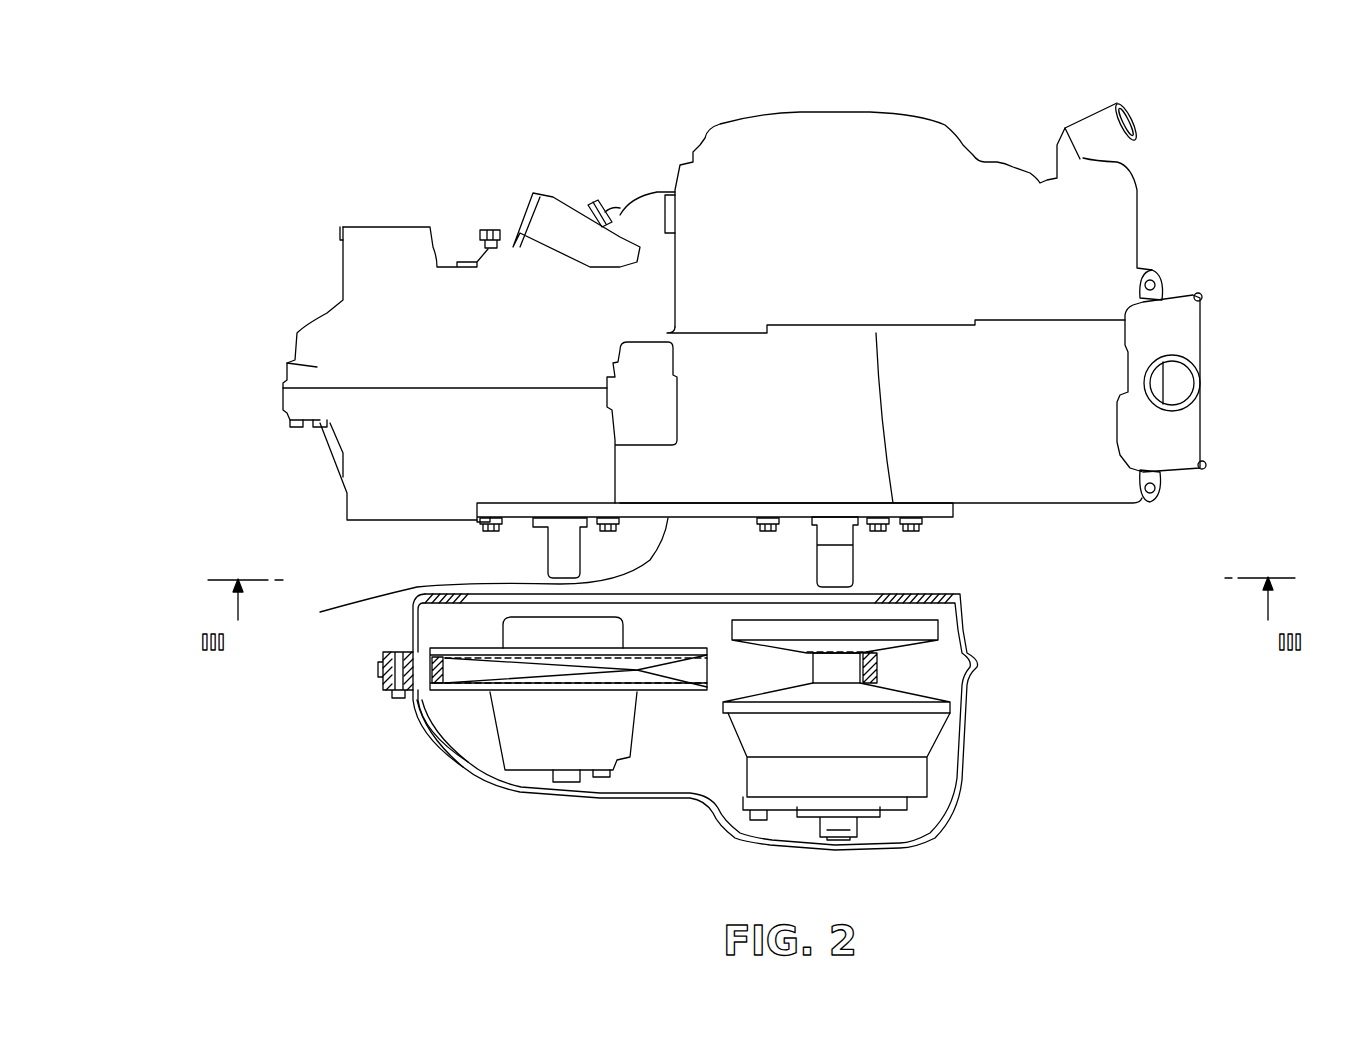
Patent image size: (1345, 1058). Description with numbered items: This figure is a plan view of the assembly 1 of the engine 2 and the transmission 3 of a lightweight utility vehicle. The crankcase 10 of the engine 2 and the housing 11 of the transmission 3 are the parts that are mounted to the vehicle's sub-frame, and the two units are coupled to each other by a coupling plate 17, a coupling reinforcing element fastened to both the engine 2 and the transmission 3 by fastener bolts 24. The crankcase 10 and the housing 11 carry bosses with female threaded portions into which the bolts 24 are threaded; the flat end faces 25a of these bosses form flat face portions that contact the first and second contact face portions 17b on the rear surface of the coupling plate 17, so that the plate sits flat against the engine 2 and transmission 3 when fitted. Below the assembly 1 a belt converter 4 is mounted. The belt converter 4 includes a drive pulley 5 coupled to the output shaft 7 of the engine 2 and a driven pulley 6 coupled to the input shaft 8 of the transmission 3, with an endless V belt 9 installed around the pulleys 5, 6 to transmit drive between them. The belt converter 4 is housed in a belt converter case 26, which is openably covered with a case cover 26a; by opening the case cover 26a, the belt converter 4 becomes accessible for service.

The assembly 1 is at (1238, 392).
The engine 2 is at (987, 145).
The transmission 3 is at (472, 198).
The belt converter 4 is at (985, 805).
The drive pulley 5 is at (913, 733).
The driven pulley 6 is at (523, 725).
The output shaft 7 is at (852, 564).
The input shaft 8 is at (557, 558).
The endless V belt 9 is at (720, 670).
The crankcase 10 is at (995, 445).
The housing 11 is at (446, 348).
The coupling plate 17 is at (475, 572).
The contact face portions 17b is at (634, 494).
The fastener bolts 24 is at (505, 523).
The flat end faces 25a is at (512, 533).
The belt converter case 26 is at (410, 630).
The case cover 26a is at (417, 727).